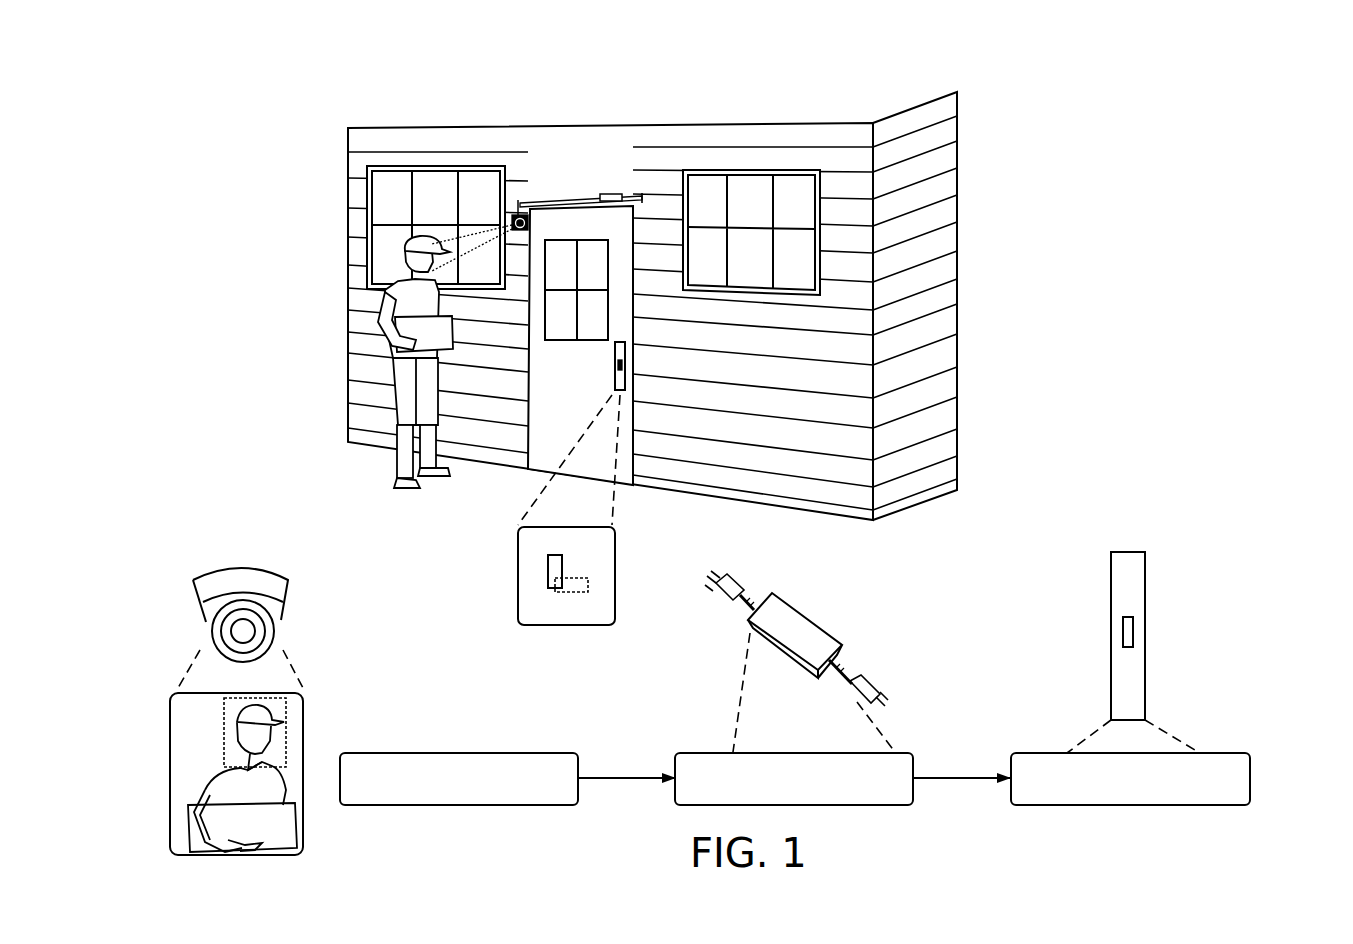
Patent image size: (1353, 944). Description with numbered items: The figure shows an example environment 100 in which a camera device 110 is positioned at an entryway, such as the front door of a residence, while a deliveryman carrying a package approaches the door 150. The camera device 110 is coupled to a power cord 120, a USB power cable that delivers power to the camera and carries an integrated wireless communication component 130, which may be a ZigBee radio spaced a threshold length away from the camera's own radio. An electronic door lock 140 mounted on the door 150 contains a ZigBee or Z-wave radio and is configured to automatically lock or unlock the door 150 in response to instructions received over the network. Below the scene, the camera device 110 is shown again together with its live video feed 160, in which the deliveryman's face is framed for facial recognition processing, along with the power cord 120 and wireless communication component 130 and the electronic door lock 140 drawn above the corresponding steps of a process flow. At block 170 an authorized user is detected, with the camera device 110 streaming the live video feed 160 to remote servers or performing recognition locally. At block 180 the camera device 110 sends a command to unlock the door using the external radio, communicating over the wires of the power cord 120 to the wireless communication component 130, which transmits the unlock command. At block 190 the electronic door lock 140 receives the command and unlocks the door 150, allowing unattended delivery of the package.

The environment 100 is at (292, 130).
The camera device 110 is at (518, 200).
The power cord 120 is at (560, 197).
The wireless communication component 130 is at (617, 193).
The electronic door lock 140 is at (614, 368).
The door 150 is at (538, 577).
The live video feed 160 is at (315, 717).
The block 170 is at (578, 753).
The block 180 is at (915, 753).
The block 190 is at (1250, 753).